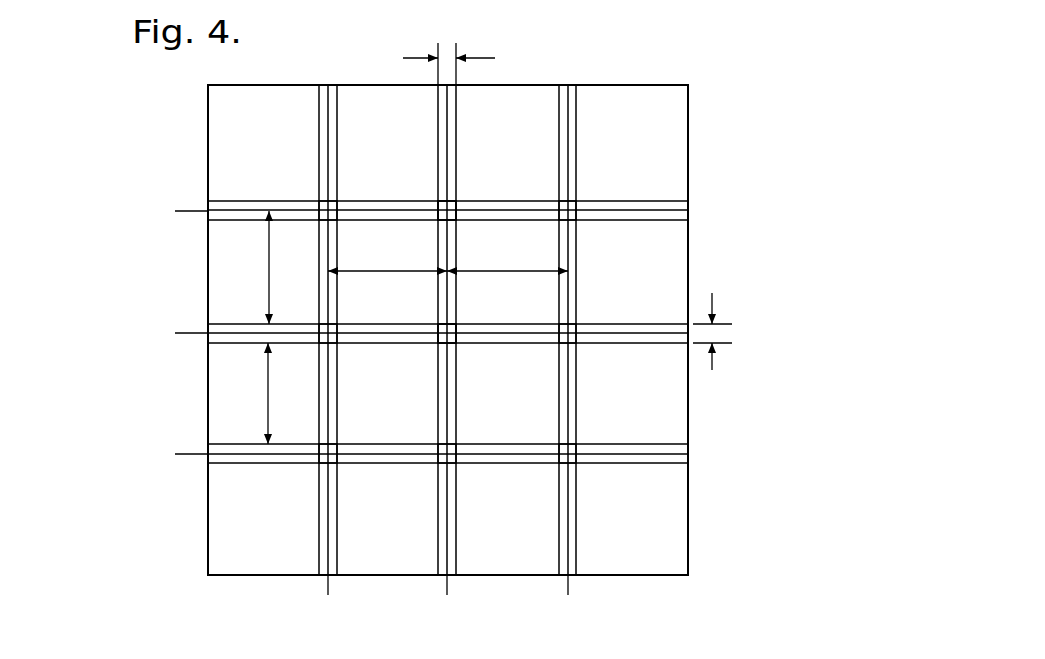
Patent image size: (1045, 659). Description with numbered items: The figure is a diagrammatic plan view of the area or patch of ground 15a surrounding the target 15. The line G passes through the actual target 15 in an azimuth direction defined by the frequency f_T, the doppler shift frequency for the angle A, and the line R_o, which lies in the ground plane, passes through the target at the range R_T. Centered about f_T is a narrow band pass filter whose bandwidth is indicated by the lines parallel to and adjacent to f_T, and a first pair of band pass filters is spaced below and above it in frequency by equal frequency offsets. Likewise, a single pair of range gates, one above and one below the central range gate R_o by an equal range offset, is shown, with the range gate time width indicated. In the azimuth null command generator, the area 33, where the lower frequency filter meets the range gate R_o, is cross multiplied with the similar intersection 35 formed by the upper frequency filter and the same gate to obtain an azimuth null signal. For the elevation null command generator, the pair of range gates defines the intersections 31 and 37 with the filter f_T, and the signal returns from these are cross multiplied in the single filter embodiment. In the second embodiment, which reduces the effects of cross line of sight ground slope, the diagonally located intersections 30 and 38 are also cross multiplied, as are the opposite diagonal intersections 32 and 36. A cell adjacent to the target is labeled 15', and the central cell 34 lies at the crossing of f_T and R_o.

The area of ground surrounding the target 15a is at (146, 156).
The target 15 is at (465, 318).
The adjacent cell at transmitted frequency and extended range 15' is at (473, 195).
The intersection 30 is at (326, 209).
The intersection 31 is at (438, 202).
The intersection 32 is at (576, 200).
The area representing intersection 33 is at (328, 340).
The cell (f_T, R0) 34 is at (437, 343).
The intersection 35 is at (562, 342).
The intersection 36 is at (317, 465).
The intersection 37 is at (438, 465).
The intersection 38 is at (558, 465).